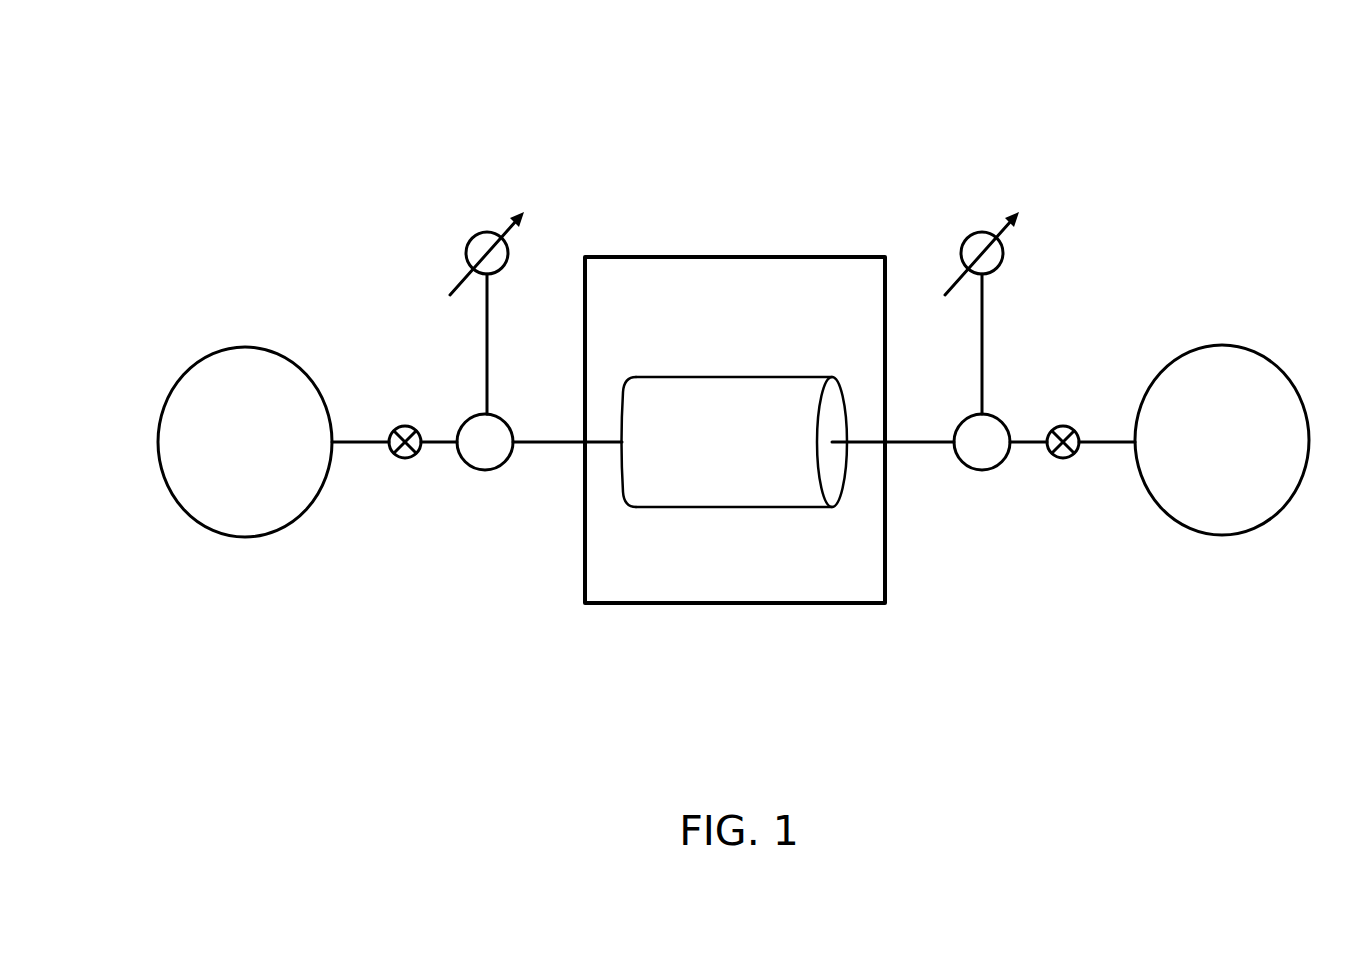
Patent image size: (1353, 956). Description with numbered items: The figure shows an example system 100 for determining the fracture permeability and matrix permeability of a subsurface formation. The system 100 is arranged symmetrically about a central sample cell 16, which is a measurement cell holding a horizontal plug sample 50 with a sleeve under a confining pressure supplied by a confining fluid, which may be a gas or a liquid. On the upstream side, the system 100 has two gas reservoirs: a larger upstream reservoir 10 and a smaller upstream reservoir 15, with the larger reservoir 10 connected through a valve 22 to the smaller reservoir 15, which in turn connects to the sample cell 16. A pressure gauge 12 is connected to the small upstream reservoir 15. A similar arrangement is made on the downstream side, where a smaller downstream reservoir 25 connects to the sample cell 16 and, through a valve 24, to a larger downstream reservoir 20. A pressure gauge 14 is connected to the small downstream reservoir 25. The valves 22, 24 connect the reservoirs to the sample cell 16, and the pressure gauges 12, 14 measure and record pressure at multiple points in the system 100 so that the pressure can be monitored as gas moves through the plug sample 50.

The system 100 is at (617, 84).
The upstream reservoir UR1 10 is at (226, 347).
The valve 22 is at (405, 426).
The upstream reservoir UR2 15 is at (462, 420).
The pressure gauge UP 12 is at (466, 253).
The sample cell 16 is at (720, 605).
The horizontal plug sample 50 is at (668, 377).
The pressure gauge DP 14 is at (1007, 255).
The downstream reservoir DR2 25 is at (1003, 416).
The valve 24 is at (1061, 424).
The downstream reservoir DR1 20 is at (1228, 344).